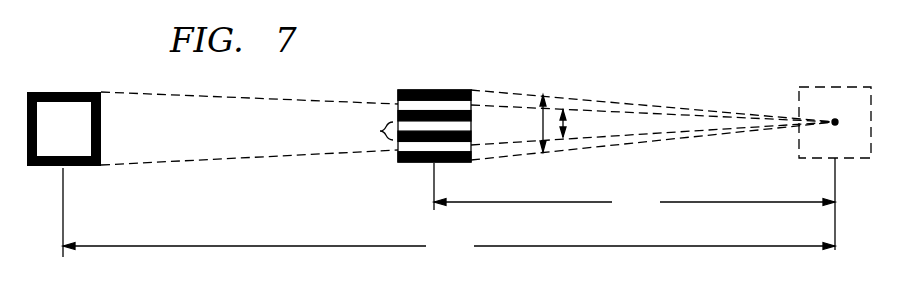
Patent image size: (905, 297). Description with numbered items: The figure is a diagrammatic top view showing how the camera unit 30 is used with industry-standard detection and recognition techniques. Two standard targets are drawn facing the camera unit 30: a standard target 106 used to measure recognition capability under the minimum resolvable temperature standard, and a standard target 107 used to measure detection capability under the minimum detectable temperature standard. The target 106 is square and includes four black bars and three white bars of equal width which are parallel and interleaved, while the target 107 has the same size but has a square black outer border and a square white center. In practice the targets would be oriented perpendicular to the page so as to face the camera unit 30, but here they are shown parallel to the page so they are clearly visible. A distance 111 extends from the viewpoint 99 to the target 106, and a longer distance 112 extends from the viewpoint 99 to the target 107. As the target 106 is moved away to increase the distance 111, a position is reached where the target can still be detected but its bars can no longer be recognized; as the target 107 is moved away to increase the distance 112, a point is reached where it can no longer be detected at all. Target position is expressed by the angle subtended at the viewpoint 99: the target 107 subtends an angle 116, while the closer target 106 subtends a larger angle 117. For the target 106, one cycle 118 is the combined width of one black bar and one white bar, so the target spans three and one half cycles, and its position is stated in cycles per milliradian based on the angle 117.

The standard target 107 is at (60, 92).
The standard target 106 is at (433, 90).
The cycle 118 is at (366, 131).
The angle 117 is at (540, 118).
The angle 116 is at (566, 118).
The camera unit 30 is at (843, 87).
The viewpoint 99 is at (835, 119).
The distance 111 is at (634, 202).
The distance 112 is at (449, 245).